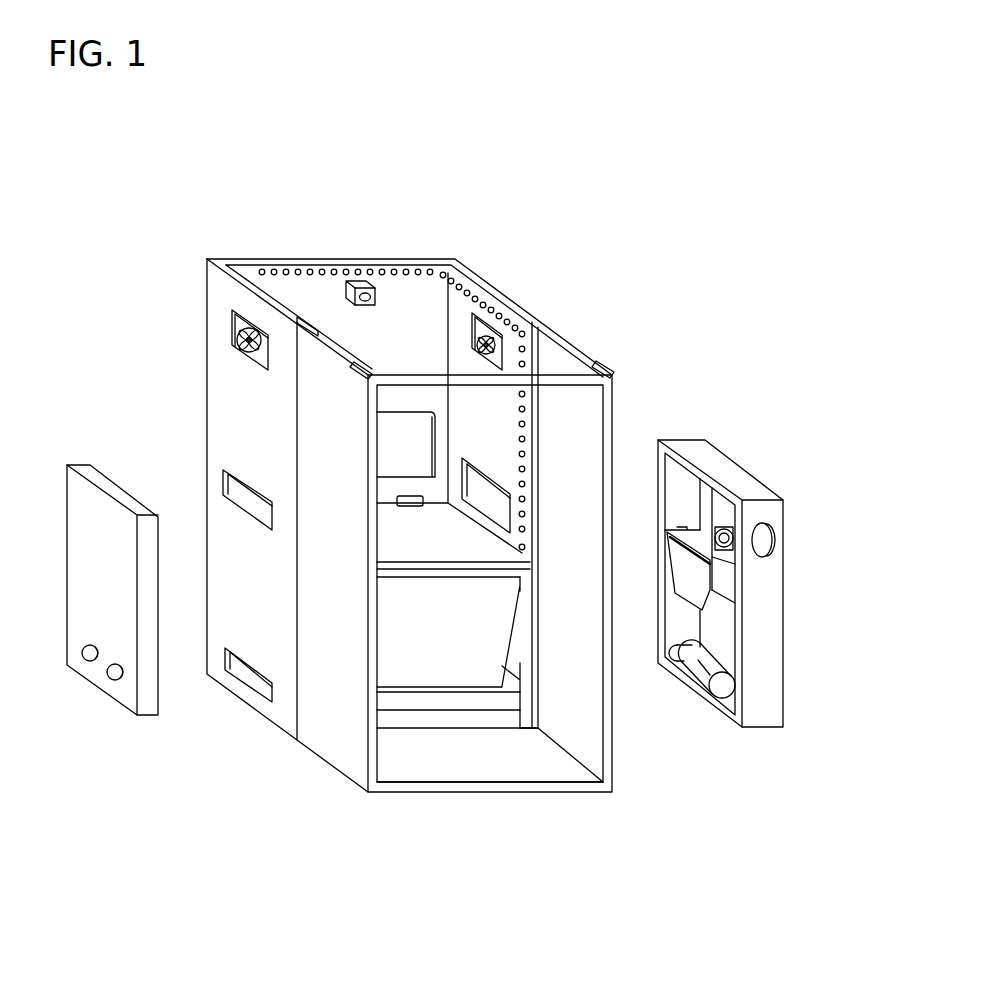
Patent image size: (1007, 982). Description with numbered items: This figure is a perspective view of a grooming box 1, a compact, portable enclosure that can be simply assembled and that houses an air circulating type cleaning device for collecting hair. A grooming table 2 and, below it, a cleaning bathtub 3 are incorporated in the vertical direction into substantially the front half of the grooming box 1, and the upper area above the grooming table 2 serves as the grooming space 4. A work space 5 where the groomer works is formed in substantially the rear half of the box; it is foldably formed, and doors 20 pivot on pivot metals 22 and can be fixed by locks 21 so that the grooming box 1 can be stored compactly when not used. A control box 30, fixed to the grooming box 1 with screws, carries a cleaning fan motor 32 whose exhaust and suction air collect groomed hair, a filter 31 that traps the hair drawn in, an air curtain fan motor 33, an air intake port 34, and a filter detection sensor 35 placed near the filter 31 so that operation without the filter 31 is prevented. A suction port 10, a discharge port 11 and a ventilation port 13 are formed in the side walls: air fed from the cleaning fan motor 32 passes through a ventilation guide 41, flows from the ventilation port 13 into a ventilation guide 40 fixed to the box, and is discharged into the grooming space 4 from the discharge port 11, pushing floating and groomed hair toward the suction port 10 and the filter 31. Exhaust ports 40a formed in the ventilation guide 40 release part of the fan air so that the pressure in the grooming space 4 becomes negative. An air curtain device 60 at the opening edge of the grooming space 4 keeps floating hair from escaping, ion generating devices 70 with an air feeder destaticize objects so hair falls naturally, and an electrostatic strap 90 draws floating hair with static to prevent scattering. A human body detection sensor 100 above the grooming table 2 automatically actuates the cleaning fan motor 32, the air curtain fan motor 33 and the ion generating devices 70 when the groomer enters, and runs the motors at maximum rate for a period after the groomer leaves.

The grooming box 1 is at (291, 255).
The grooming table 2 is at (413, 540).
The cleaning bathtub 3 is at (440, 662).
The grooming space 4 is at (535, 319).
The work space 5 is at (523, 750).
The suction port 10 is at (497, 480).
The discharge port 11 is at (223, 495).
The ventilation port 13 is at (247, 687).
The door 20 is at (333, 440).
The lock 21 is at (370, 371).
The pivot metal 22 is at (297, 323).
The control box 30 is at (742, 593).
The filter 31 is at (675, 570).
The cleaning fan motor 32 is at (720, 690).
The air curtain fan motor 33 is at (724, 527).
The air intake port 34 is at (764, 520).
The filter detection sensor 35 is at (687, 527).
The ventilation guide 40 is at (83, 583).
The exhaust port 40a is at (84, 663).
The ventilation guide 41 is at (470, 703).
The air curtain device 60 is at (473, 291).
The ion generating device 70 is at (233, 331).
The electrostatic strap 90 is at (441, 274).
The human body detection sensor 100 is at (357, 281).